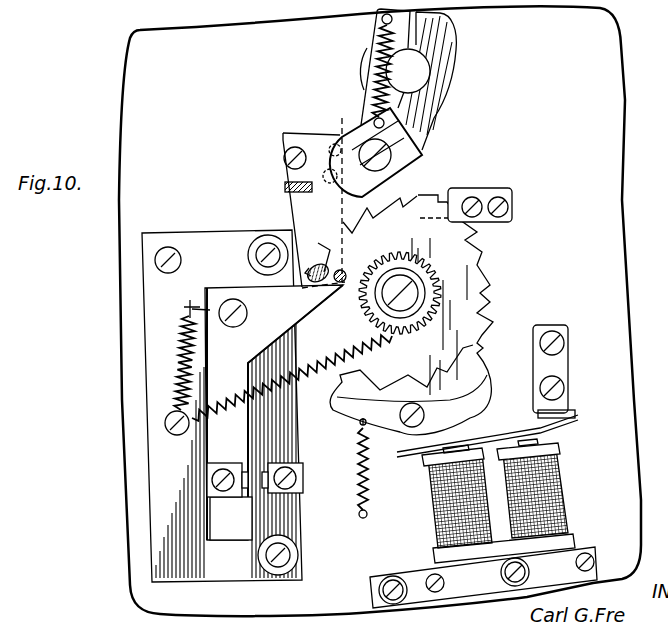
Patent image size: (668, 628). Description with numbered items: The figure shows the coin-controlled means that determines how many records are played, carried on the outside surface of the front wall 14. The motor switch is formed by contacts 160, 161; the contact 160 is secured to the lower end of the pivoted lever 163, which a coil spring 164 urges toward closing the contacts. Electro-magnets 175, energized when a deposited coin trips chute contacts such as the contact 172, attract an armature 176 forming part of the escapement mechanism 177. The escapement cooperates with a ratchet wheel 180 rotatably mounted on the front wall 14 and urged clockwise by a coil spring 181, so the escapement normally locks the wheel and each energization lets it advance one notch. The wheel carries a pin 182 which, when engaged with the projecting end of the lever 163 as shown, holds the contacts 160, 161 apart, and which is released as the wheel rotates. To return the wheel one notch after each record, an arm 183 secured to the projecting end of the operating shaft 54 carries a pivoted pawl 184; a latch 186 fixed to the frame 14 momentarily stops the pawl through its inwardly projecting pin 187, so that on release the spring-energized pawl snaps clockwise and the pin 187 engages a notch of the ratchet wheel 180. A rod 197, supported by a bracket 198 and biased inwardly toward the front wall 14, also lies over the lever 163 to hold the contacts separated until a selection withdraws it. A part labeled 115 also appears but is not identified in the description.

The front wall 14 is at (610, 177).
The operating shaft 54 is at (421, 71).
The spring 115 is at (377, 90).
The contact 160 is at (235, 495).
The contact 161 is at (273, 497).
The pivoted lever 163 is at (218, 361).
The coil spring 164 is at (173, 387).
The electric contact 172 is at (352, 466).
The electro-magnets 175 is at (488, 482).
The armature 176 is at (487, 391).
The escapement mechanism 177 is at (412, 435).
The ratchet wheel 180 is at (455, 265).
The coil spring 181 is at (450, 300).
The pin 182 is at (342, 270).
The arm 183 is at (428, 110).
The pivoted pawl 184 is at (403, 152).
The latch 186 is at (445, 186).
The pin 187 is at (283, 166).
The rod 197 is at (300, 292).
The bracket 198 is at (283, 196).